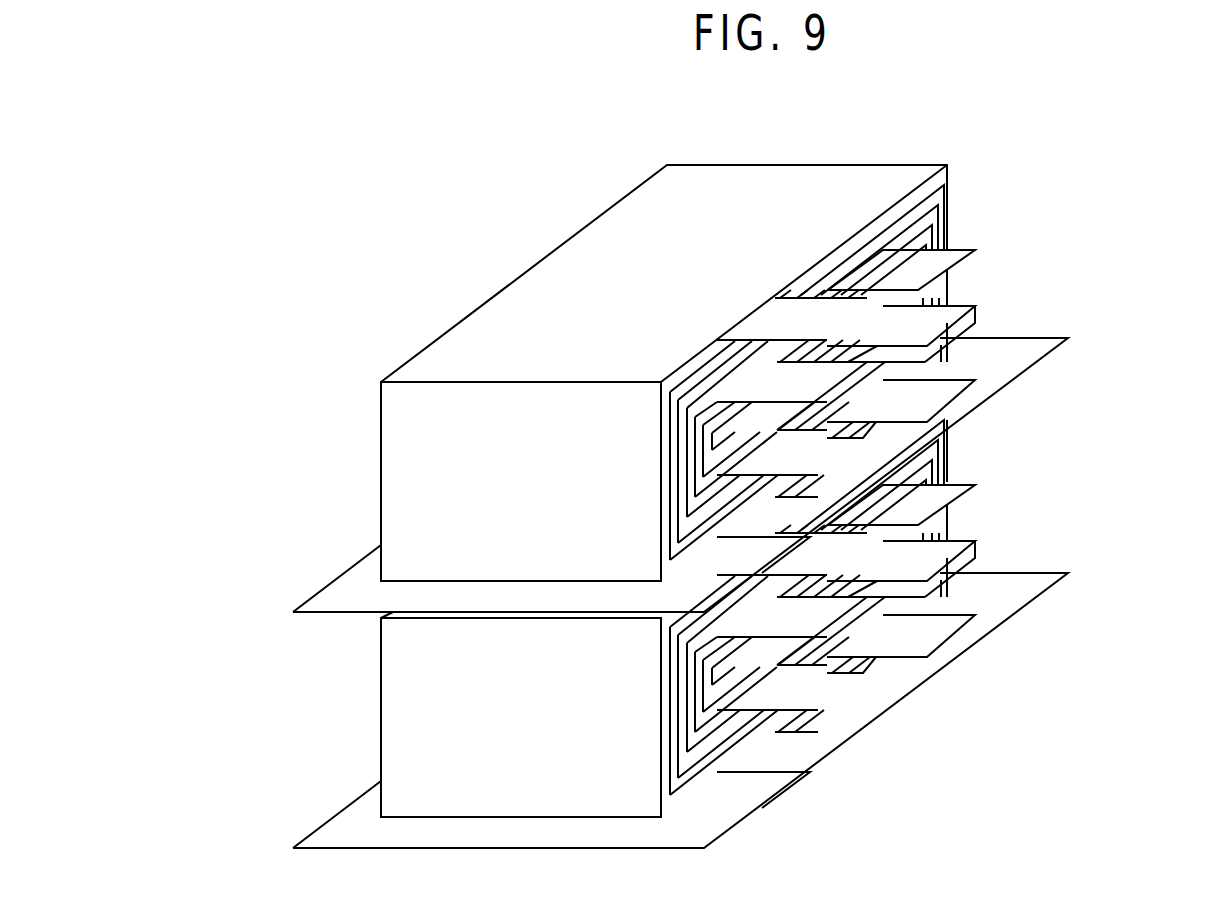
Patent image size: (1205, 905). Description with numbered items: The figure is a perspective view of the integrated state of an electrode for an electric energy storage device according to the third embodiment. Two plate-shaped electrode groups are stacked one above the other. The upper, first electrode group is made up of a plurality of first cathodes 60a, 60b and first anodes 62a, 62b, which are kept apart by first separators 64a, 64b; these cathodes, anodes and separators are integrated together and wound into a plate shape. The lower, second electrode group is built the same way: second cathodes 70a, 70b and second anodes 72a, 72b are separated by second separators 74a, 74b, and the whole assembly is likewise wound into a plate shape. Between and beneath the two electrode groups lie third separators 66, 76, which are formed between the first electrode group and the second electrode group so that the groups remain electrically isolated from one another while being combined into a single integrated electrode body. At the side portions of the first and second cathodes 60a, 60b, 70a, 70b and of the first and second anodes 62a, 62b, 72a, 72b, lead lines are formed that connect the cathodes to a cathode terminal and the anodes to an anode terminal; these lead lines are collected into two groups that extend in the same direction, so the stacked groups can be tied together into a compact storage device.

The first cathode 60a is at (780, 322).
The first cathode 60b is at (778, 382).
The first anode 62a is at (963, 256).
The first anode 62b is at (963, 302).
The first separator 64a is at (935, 204).
The first separator 64b is at (937, 241).
The third separator 66 is at (318, 597).
The second cathode 70a is at (827, 688).
The second cathode 70b is at (823, 750).
The second anode 72a is at (963, 493).
The second anode 72b is at (963, 536).
The second separator 74a is at (950, 435).
The second separator 74b is at (950, 472).
The third separator 76 is at (320, 833).